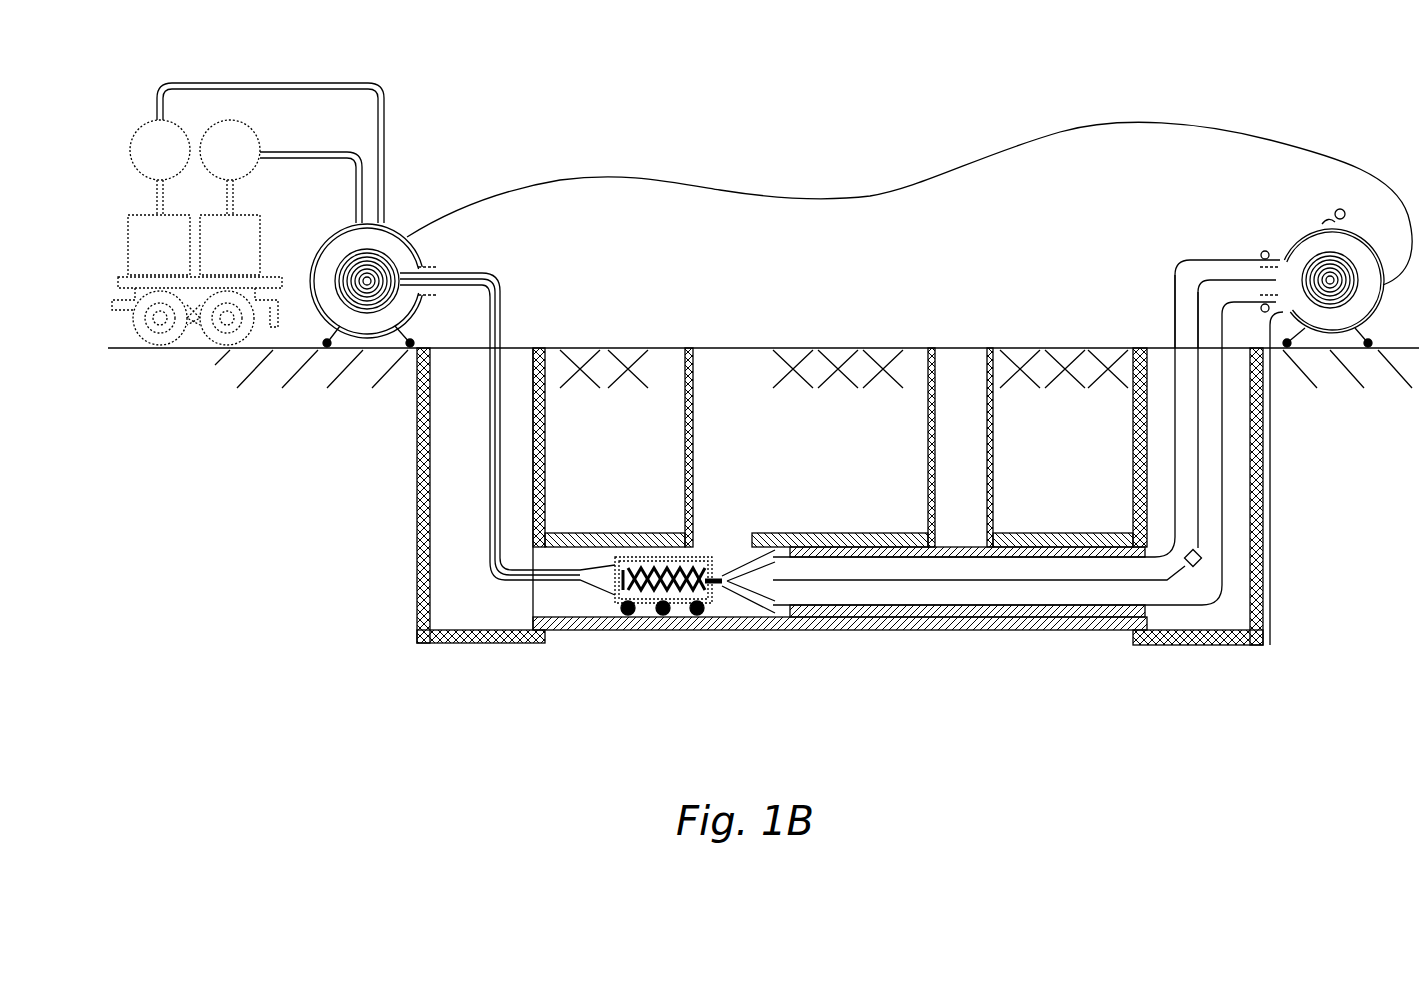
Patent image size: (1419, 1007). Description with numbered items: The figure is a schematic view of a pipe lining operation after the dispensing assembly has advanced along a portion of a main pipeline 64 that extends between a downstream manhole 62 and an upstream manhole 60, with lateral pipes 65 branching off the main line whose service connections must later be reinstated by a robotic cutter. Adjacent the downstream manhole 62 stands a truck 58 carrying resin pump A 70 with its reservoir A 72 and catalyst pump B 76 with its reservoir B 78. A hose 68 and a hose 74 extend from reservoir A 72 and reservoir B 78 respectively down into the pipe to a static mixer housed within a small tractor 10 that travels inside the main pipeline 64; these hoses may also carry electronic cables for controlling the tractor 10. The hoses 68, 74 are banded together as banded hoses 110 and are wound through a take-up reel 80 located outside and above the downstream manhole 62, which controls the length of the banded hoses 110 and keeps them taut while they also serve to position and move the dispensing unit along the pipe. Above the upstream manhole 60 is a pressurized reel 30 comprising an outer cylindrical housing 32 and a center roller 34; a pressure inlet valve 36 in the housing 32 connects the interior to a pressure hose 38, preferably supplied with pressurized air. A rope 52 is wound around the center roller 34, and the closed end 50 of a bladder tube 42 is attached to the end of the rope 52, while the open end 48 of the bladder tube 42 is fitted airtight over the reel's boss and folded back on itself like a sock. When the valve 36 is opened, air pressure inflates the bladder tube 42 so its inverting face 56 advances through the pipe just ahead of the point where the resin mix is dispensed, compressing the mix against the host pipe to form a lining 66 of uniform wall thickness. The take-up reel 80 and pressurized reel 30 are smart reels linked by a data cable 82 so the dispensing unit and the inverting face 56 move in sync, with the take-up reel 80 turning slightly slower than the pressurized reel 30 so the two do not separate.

The tractor 10 is at (645, 548).
The pressurized reel 30 is at (1311, 299).
The outer cylindrical housing 32 is at (1367, 245).
The center roller 34 is at (1333, 284).
The pressure inlet valve 36 is at (1327, 221).
The pressure hose 38 is at (1343, 210).
The bladder tube 42 is at (1163, 300).
The open end of bladder tube 48 is at (1263, 251).
The closed end of bladder tube 50 is at (1197, 553).
The rope 52 is at (1200, 460).
The inverting face 56 is at (772, 568).
The truck 58 is at (267, 273).
The upstream manhole 60 is at (1133, 456).
The downstream manhole 62 is at (547, 436).
The main pipeline 64 is at (1072, 545).
The lateral pipes 65 is at (685, 450).
The lining 66 is at (995, 614).
The hose 68 is at (385, 112).
The resin pump A 70 is at (172, 118).
The reservoir A 72 is at (168, 213).
The hose 74 is at (340, 158).
The catalyst pump B 76 is at (256, 132).
The reservoir B 78 is at (238, 213).
The take-up reel 80 is at (405, 210).
The data cable 82 is at (993, 155).
The banded hoses 110 is at (500, 302).